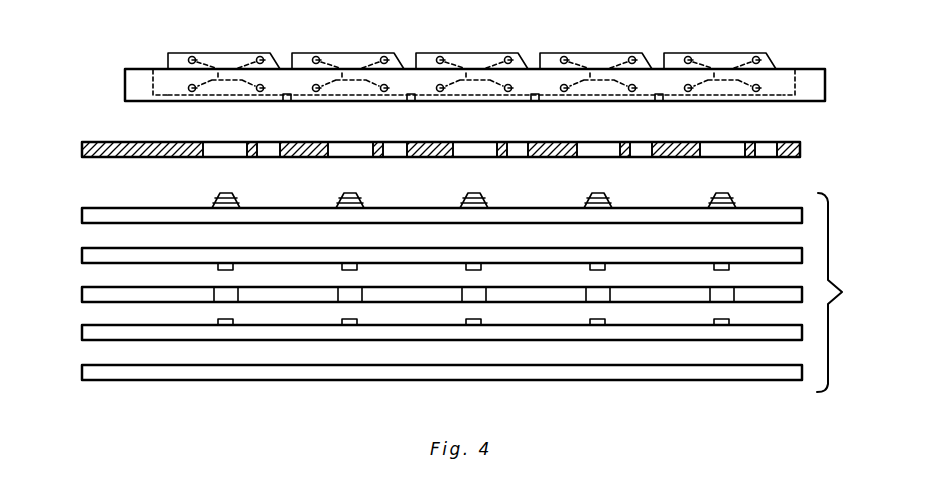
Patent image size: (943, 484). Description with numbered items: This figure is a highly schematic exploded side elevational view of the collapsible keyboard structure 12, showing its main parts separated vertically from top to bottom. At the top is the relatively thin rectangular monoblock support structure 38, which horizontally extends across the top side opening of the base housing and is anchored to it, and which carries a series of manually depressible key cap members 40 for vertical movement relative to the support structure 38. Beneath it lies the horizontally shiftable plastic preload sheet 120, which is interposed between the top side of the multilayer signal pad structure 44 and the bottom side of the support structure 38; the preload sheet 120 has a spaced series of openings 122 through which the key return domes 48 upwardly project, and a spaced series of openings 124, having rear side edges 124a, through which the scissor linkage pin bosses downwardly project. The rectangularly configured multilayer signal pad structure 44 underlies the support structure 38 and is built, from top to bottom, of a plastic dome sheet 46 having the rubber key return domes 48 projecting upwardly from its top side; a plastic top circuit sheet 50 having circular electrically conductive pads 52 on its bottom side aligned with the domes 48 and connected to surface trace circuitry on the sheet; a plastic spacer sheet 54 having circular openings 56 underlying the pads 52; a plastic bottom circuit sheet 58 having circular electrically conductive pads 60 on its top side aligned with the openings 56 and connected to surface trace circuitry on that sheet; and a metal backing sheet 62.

The collapsible keyboard structure 12 is at (85, 79).
The monoblock support structure 38 is at (830, 88).
The key cap members 40 is at (228, 33).
The multilayer signal pad structure 44 is at (846, 292).
The dome sheet 46 is at (82, 213).
The key return domes 48 is at (241, 199).
The top circuit sheet 50 is at (82, 253).
The electrically conductive pads 52 is at (203, 265).
The spacer sheet 54 is at (82, 292).
The circular openings 56 is at (220, 290).
The bottom circuit sheet 58 is at (82, 330).
The electrically conductive pads 60 is at (232, 322).
The metal backing sheet 62 is at (82, 369).
The preload sheet 120 is at (428, 143).
The openings 122 is at (230, 120).
The openings 124 is at (268, 145).
The rear side edges 124a is at (268, 157).